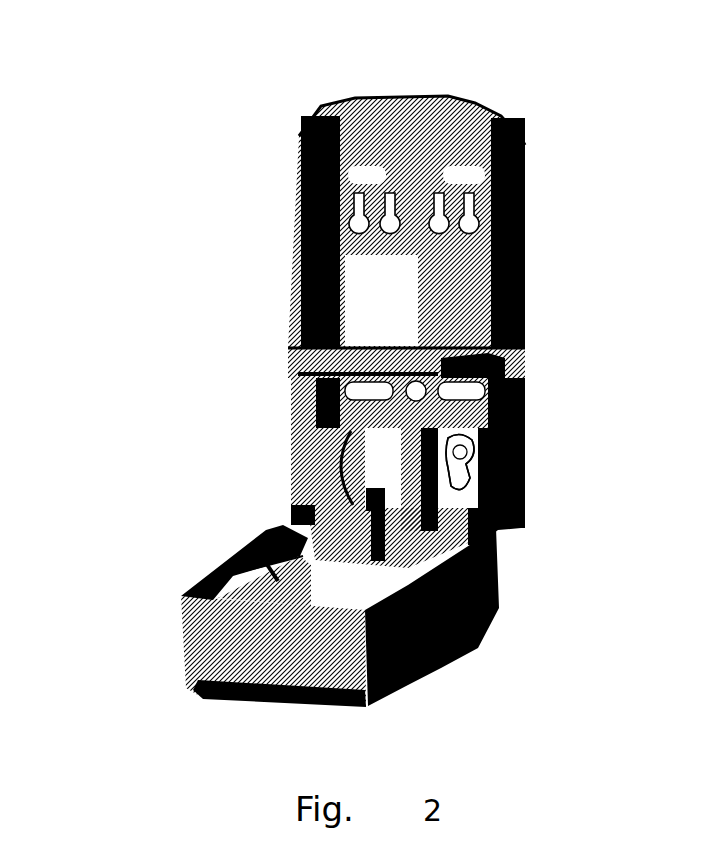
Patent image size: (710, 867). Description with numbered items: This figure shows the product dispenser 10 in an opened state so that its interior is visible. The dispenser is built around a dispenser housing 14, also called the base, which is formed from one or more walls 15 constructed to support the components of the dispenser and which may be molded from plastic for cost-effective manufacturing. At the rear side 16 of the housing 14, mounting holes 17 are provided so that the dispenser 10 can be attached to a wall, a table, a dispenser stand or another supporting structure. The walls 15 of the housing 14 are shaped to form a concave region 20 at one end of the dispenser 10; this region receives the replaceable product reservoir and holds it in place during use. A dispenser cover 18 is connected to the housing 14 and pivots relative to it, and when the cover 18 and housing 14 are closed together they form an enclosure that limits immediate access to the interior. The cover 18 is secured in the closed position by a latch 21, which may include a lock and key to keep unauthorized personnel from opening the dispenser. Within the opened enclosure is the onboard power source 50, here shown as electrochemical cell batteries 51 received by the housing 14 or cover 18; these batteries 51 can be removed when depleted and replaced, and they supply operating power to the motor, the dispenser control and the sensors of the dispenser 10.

The product dispenser 10 is at (208, 235).
The dispenser housing 14 is at (512, 237).
The walls 15 is at (512, 290).
The rear side 16 is at (548, 152).
The mounting holes 17 is at (385, 208).
The dispenser cover 18 is at (235, 655).
The concave region 20 is at (365, 420).
The latch 21 is at (230, 543).
The power source 50 is at (503, 410).
The batteries 51 is at (574, 442).